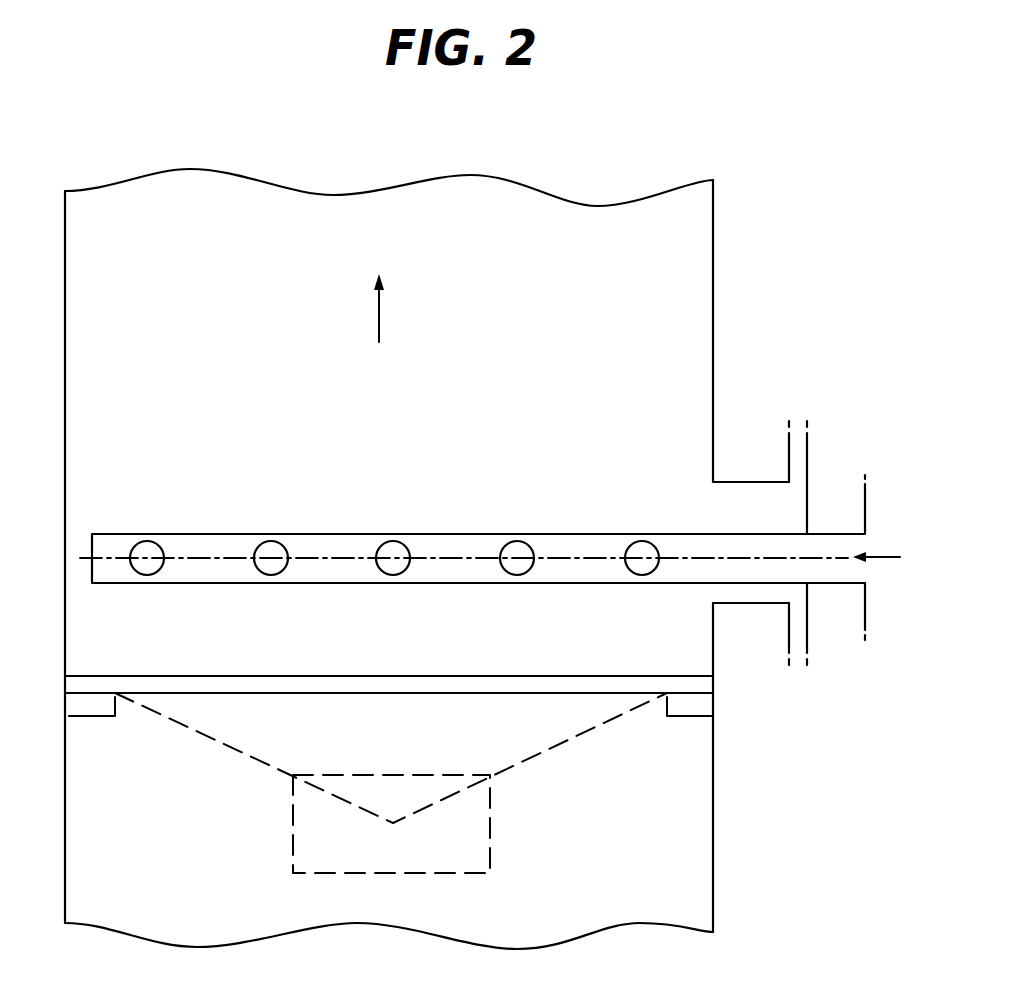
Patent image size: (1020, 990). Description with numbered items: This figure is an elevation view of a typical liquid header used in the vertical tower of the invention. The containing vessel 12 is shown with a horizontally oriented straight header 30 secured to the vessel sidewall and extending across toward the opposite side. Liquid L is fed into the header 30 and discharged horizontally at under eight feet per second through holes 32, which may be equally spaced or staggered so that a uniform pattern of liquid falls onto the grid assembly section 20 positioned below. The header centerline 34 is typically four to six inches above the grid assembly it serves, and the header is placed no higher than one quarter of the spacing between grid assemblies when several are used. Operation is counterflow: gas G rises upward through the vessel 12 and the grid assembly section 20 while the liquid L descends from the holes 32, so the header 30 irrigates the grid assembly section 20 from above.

The containing vessel 12 is at (713, 276).
The grid assembly section 20 is at (562, 745).
The header 30 is at (841, 482).
The holes 32 is at (377, 551).
The header centerline 34 is at (465, 557).
The gas G is at (379, 320).
The liquid L is at (882, 560).